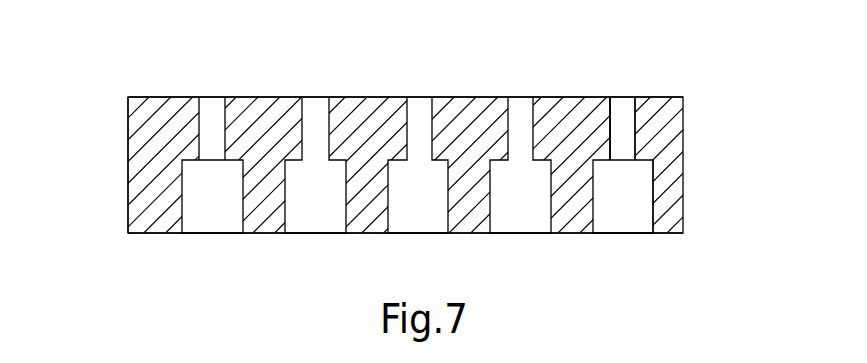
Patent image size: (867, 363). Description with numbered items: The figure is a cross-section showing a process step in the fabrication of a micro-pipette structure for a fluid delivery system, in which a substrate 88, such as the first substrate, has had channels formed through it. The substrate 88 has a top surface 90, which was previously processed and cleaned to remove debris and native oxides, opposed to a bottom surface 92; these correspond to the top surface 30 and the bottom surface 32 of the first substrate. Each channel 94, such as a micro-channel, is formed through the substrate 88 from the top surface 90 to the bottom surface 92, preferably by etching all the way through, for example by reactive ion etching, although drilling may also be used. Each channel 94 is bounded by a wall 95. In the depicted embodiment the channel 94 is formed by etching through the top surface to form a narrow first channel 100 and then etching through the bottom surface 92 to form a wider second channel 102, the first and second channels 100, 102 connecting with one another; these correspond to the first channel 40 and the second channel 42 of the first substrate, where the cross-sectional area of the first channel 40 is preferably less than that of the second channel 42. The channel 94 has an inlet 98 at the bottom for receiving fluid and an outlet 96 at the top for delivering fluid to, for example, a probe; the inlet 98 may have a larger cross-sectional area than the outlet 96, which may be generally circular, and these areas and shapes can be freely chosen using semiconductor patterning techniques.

The top surface 30 is at (670, 96).
The bottom surface 32 is at (668, 233).
The first channel 40 is at (212, 120).
The second channel 42 is at (215, 213).
The substrate 88 is at (127, 182).
The top surface 90 is at (458, 95).
The bottom surface 92 is at (372, 233).
The channel 94 is at (623, 96).
The wall 95 is at (550, 190).
The outlet 96 is at (614, 96).
The inlet 98 is at (617, 233).
The first channel 100 is at (627, 123).
The second channel 102 is at (640, 208).